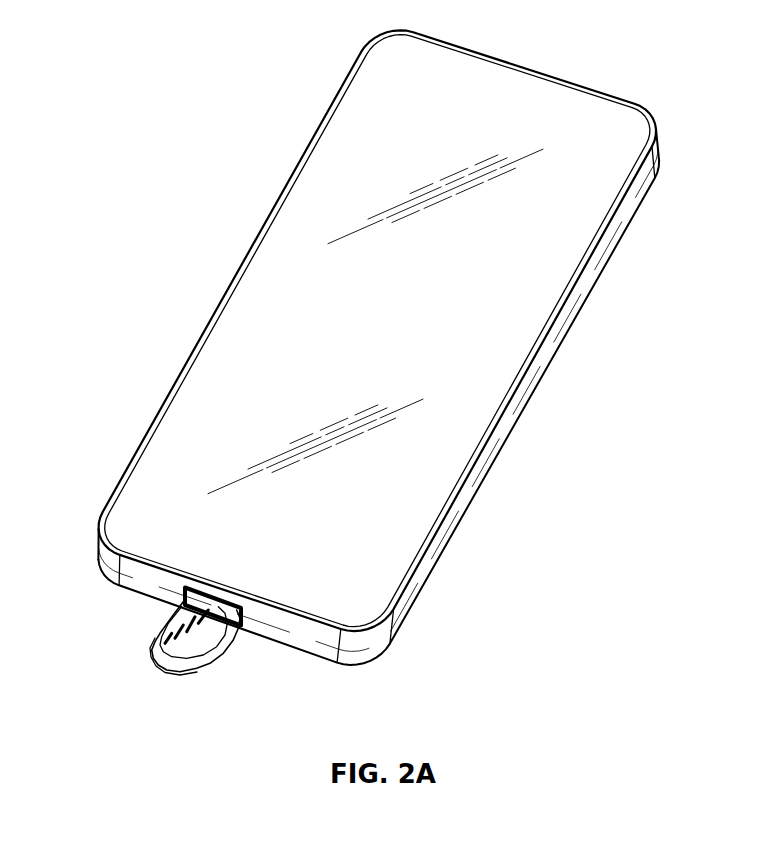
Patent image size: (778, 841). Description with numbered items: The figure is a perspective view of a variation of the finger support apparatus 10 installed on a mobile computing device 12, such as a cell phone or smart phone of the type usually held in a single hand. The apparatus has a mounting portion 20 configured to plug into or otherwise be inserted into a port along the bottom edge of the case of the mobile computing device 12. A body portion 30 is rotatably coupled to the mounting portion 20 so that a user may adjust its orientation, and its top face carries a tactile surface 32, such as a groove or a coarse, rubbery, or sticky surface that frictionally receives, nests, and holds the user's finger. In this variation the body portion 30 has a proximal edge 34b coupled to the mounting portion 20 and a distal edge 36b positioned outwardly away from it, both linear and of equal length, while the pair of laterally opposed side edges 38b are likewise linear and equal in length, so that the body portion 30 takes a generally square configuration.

The finger support apparatus 10 is at (98, 601).
The mobile computing device 12 is at (518, 396).
The mounting portion 20 is at (252, 582).
The proximal edge 34b is at (214, 596).
The body portion 30 is at (193, 660).
The tactile surface 32 is at (180, 637).
The distal edge 36b is at (162, 663).
The lateral side edges 38b is at (227, 653).